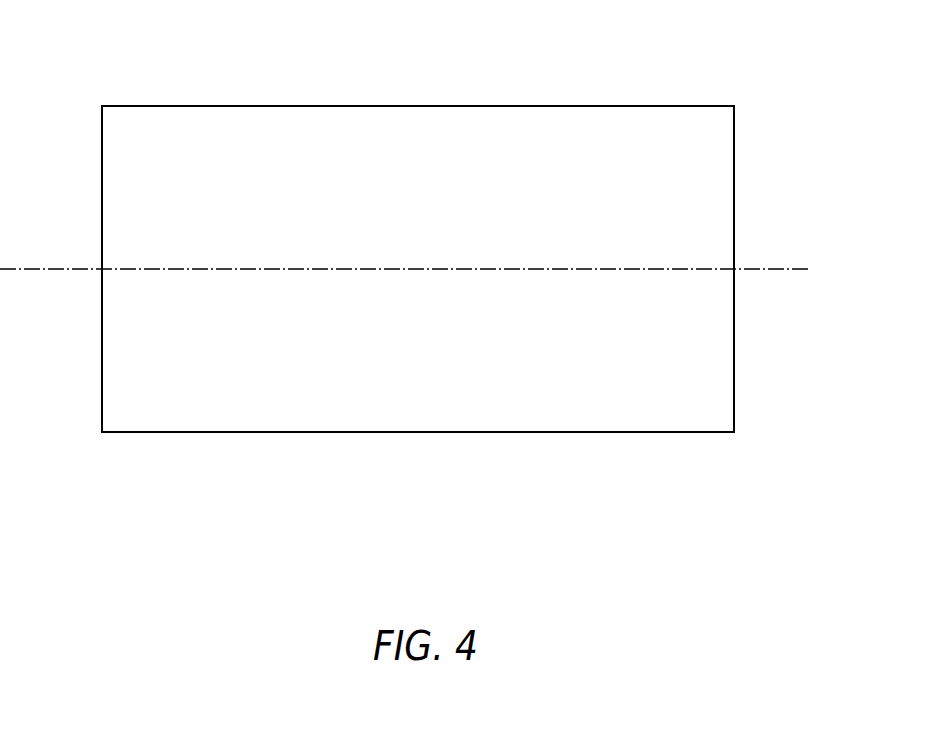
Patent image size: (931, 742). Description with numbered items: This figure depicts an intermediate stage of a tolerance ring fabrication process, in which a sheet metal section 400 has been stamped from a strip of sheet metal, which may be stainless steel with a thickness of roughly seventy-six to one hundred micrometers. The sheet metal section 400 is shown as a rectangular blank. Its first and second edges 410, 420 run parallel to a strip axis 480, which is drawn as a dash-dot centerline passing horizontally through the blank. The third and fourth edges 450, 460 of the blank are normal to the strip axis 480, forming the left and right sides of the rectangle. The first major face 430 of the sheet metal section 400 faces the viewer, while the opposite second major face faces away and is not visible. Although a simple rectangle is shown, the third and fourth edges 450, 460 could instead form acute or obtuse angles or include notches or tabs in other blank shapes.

The sheet metal section 400 is at (256, 46).
The first edge 410 is at (402, 106).
The second edge 420 is at (598, 433).
The first major face 430 is at (315, 414).
The third edge 450 is at (101, 314).
The fourth edge 460 is at (735, 394).
The strip axis 480 is at (747, 269).